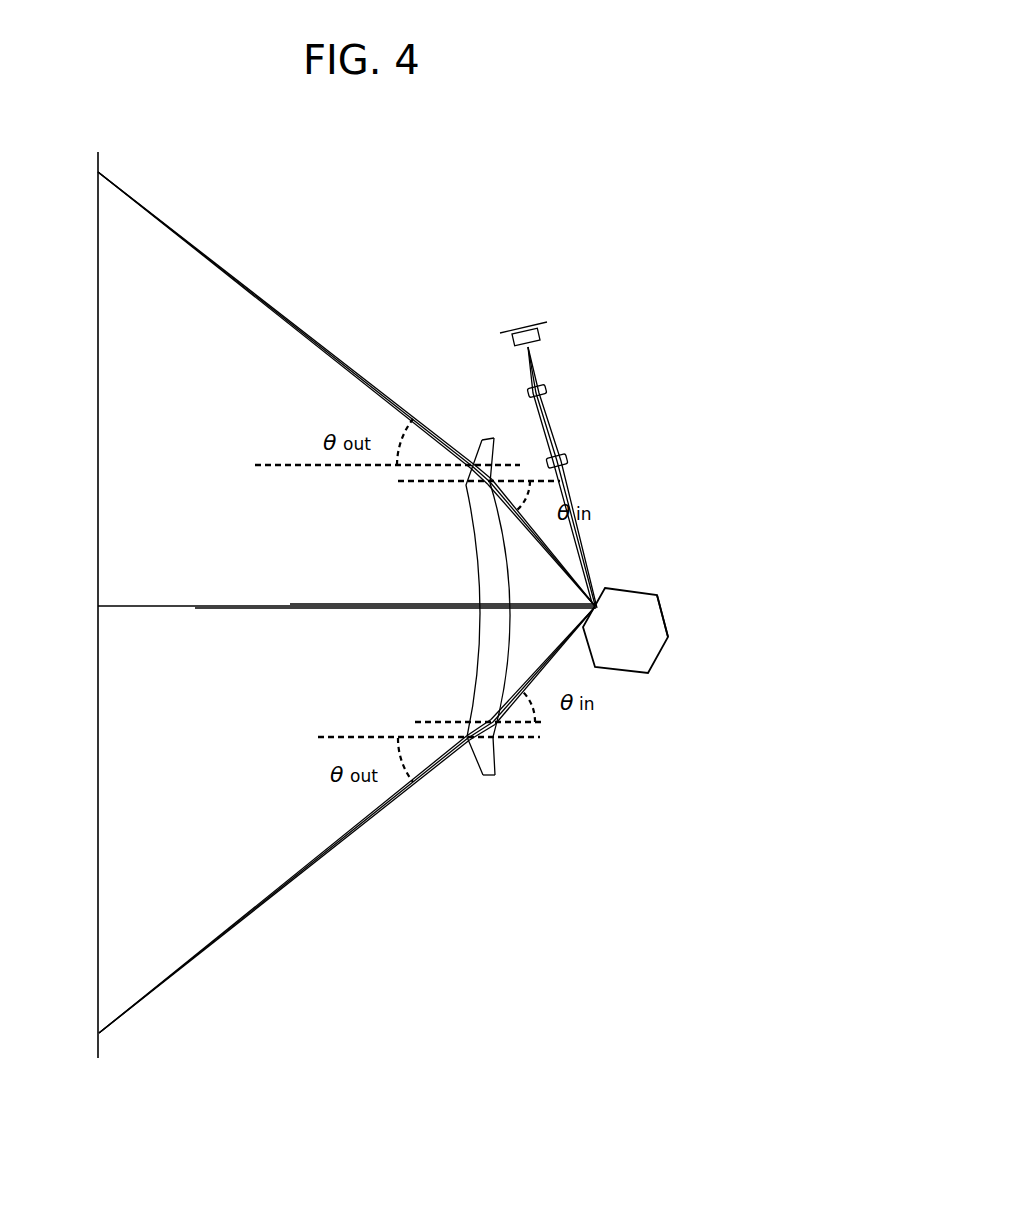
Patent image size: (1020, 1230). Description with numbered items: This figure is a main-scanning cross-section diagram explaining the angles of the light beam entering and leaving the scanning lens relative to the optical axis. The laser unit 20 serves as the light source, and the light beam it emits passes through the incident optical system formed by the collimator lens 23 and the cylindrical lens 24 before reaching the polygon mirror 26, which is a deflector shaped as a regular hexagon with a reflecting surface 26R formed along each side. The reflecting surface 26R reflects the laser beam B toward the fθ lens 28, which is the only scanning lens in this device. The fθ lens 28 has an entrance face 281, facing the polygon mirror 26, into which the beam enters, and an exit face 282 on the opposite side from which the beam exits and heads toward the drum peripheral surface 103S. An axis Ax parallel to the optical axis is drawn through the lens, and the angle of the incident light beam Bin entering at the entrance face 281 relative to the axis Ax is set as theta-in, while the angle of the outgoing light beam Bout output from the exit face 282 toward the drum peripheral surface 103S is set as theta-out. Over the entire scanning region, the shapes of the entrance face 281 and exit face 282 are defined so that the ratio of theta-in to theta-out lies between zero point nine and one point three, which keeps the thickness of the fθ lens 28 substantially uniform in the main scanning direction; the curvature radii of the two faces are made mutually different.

The laser unit 20 is at (545, 332).
The collimator lens 23 is at (548, 391).
The cylindrical lens 24 is at (568, 460).
The polygon mirror 26 is at (675, 588).
The reflecting surface 26R is at (664, 613).
The fθ lens 28 is at (531, 621).
The entrance face 281 is at (493, 757).
The exit face 282 is at (473, 758).
The drum peripheral surface 103S is at (100, 894).
The laser beam B is at (317, 590).
The outgoing light beam Bout is at (363, 384).
The incident light beam Bin is at (581, 548).
The axis Ax is at (353, 467).